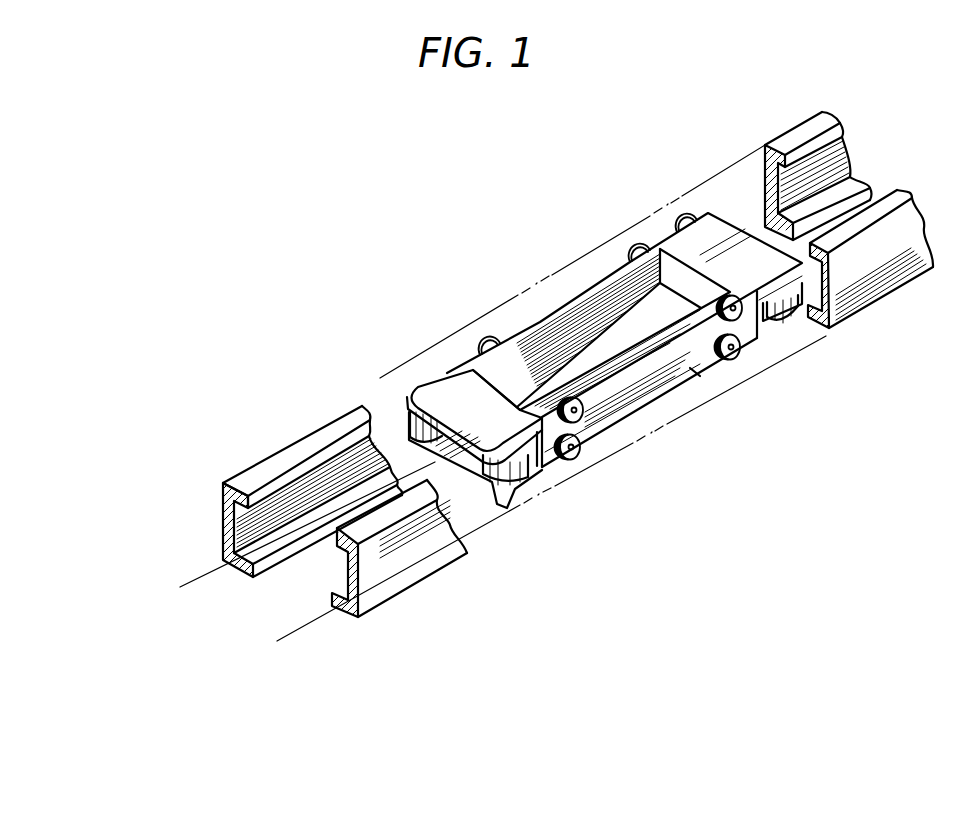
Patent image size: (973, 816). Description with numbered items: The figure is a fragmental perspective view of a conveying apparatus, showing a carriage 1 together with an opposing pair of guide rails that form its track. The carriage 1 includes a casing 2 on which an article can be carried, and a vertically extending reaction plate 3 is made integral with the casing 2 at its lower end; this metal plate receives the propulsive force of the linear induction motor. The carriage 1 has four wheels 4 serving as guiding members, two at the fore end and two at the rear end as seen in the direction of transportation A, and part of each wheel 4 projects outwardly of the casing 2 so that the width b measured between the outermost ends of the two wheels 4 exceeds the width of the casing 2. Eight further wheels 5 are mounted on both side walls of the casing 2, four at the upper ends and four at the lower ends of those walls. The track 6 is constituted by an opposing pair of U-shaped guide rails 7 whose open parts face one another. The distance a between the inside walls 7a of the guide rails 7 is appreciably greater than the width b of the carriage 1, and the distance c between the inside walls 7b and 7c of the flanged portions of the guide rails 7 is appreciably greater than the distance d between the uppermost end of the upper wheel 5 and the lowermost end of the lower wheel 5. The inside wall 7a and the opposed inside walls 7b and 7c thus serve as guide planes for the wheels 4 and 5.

The carriage 1 is at (580, 279).
The casing 2 is at (618, 307).
The reaction plate 3 is at (675, 395).
The wheels 4 is at (412, 389).
The wheels 5 is at (571, 460).
The track 6 is at (879, 170).
The U-shaped guide rails 7 is at (812, 123).
The inside wall 7a is at (220, 535).
The inside wall of flanged portion 7b is at (222, 492).
The inside wall of flanged portion 7c is at (264, 548).
The direction of transportation A is at (412, 462).
The distance between inside walls a is at (282, 635).
The width of carriage b is at (413, 232).
The distance between flange inside walls c is at (447, 600).
The distance between wheel ends d is at (608, 376).